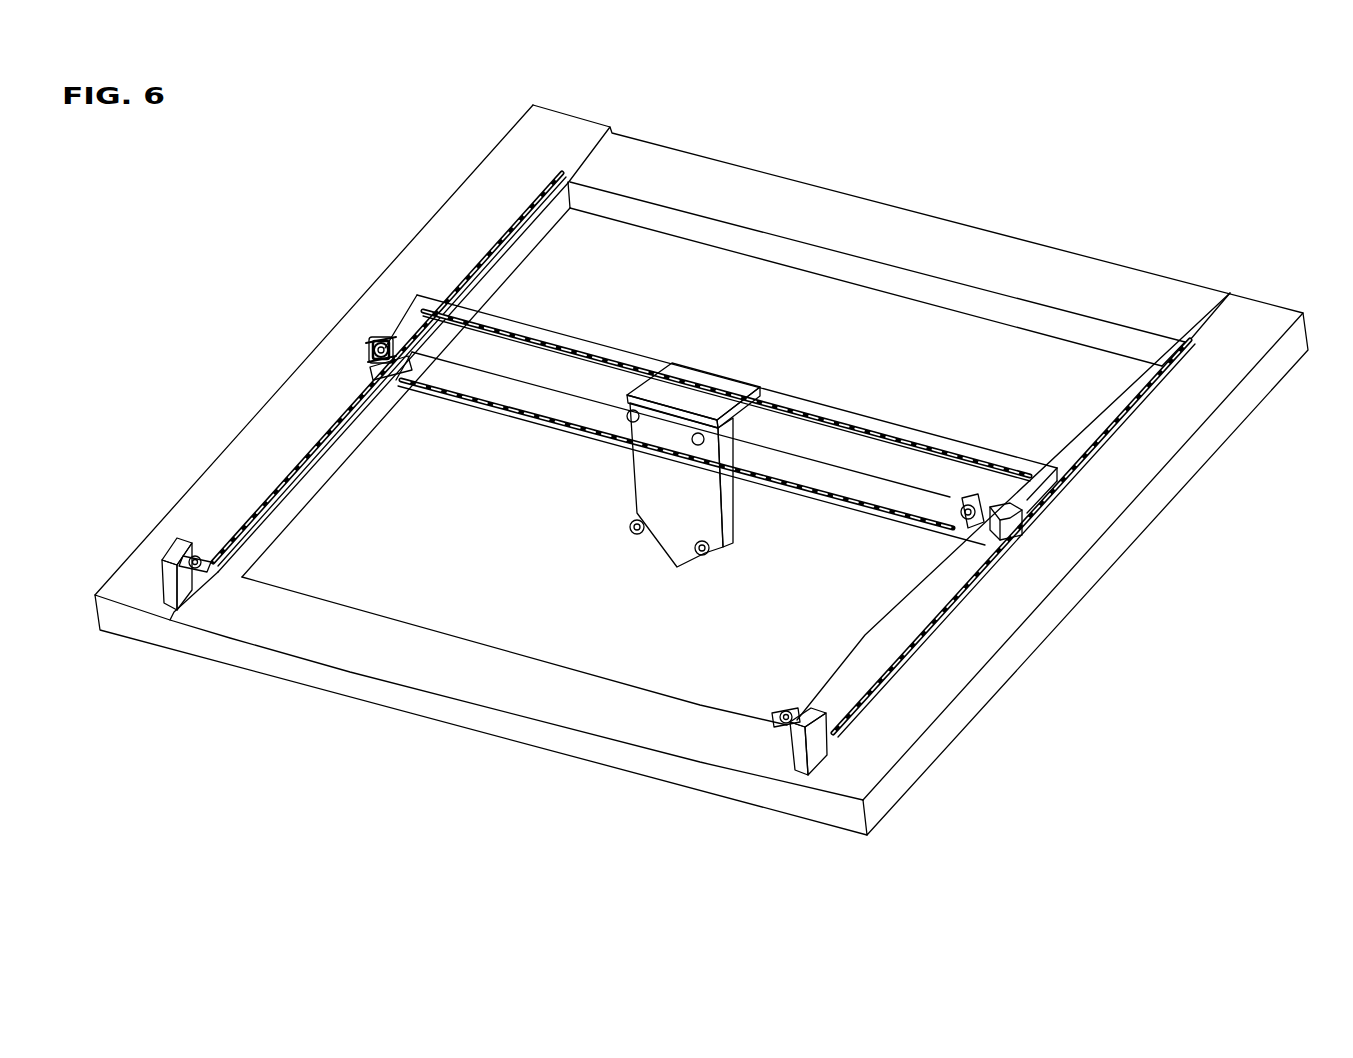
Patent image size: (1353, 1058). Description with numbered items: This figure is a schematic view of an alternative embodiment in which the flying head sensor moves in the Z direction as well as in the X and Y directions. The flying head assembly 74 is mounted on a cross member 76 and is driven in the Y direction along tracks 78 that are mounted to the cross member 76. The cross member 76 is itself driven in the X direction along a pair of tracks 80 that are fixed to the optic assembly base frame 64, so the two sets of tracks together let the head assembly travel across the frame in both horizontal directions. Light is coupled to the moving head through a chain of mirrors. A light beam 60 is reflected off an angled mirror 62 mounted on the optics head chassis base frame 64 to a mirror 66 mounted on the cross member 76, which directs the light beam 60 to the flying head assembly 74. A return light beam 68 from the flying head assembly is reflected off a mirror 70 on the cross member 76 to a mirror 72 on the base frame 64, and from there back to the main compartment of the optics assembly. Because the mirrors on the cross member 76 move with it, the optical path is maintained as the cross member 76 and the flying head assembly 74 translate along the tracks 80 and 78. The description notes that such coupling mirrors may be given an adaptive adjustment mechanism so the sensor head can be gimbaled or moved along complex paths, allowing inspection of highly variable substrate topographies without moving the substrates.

The light beam 60 is at (193, 562).
The angled mirror 62 is at (193, 567).
The optic assembly base frame 64 is at (527, 185).
The mirror 66 is at (380, 338).
The return light beam 68 is at (787, 718).
The mirror 70 is at (965, 518).
The mirror 72 is at (785, 723).
The flying head assembly 74 is at (686, 505).
The cross member 76 is at (918, 476).
The tracks 78 is at (537, 335).
The pair of tracks 80 is at (505, 242).